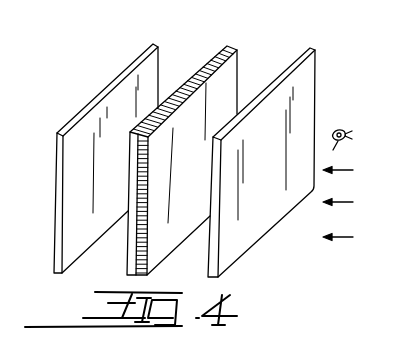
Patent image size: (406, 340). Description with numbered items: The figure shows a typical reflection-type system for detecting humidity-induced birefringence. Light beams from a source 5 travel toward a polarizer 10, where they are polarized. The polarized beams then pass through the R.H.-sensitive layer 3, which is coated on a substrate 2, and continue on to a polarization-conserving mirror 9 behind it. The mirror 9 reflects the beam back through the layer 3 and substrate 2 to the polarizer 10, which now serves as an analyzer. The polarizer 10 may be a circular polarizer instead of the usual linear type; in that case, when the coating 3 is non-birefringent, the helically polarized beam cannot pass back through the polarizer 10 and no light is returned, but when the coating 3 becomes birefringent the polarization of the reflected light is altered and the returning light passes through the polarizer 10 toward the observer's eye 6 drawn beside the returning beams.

The polarization-conserving mirror 9 is at (156, 46).
The substrate 2 is at (224, 46).
The R.H.-sensitive layer 3 is at (237, 50).
The polarizer 10 is at (315, 50).
The observer's eye 6 is at (345, 128).
The source 5 is at (353, 172).